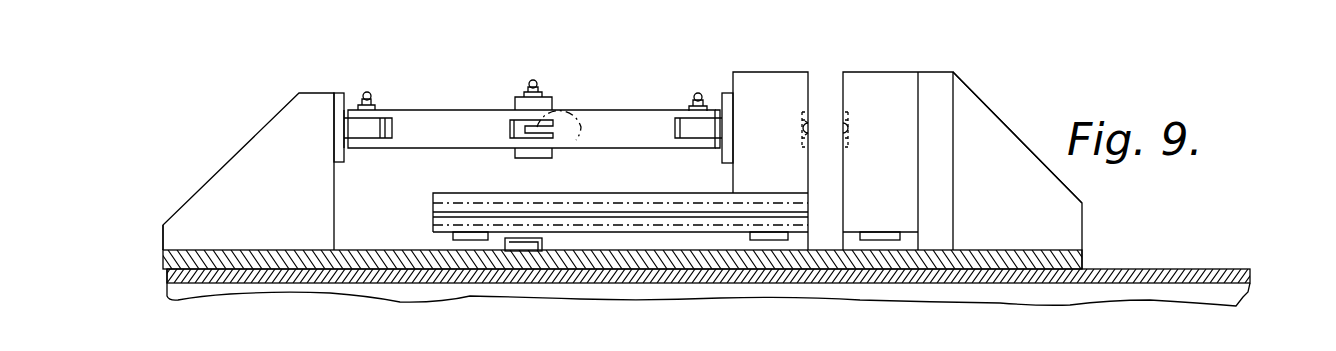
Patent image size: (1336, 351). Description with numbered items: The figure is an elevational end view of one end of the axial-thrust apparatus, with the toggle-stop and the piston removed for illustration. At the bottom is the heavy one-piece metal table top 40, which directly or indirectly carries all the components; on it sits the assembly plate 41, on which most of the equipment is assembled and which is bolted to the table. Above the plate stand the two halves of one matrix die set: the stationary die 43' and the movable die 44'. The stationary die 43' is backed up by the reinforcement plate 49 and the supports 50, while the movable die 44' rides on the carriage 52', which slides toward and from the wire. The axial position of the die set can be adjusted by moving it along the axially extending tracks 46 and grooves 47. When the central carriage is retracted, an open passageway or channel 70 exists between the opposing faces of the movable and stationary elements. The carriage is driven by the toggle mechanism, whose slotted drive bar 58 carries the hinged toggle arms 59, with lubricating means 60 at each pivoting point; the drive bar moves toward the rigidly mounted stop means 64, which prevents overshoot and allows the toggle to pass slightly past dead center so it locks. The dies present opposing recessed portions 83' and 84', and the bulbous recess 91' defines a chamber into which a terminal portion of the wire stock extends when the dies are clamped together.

The table top 40 is at (160, 284).
The assembly plate 41 is at (1075, 263).
The stationary die 43' is at (898, 141).
The movable die 44' is at (765, 140).
The axially extending tracks 46 is at (463, 237).
The grooves 47 is at (482, 237).
The reinforcement plate 49 is at (947, 72).
The supports 50 is at (1005, 175).
The carriage 52' is at (620, 194).
The slotted drive bar 58 is at (515, 101).
The toggle arms 59 is at (440, 140).
The lubricating means 60 is at (371, 91).
The stop means 64 is at (583, 147).
The passageway or channel 70 is at (826, 82).
The recessed portion of immovable matrix die 83' is at (873, 139).
The recessed portion of movable matrix die 84' is at (781, 144).
The bulbous recess 91' is at (781, 121).